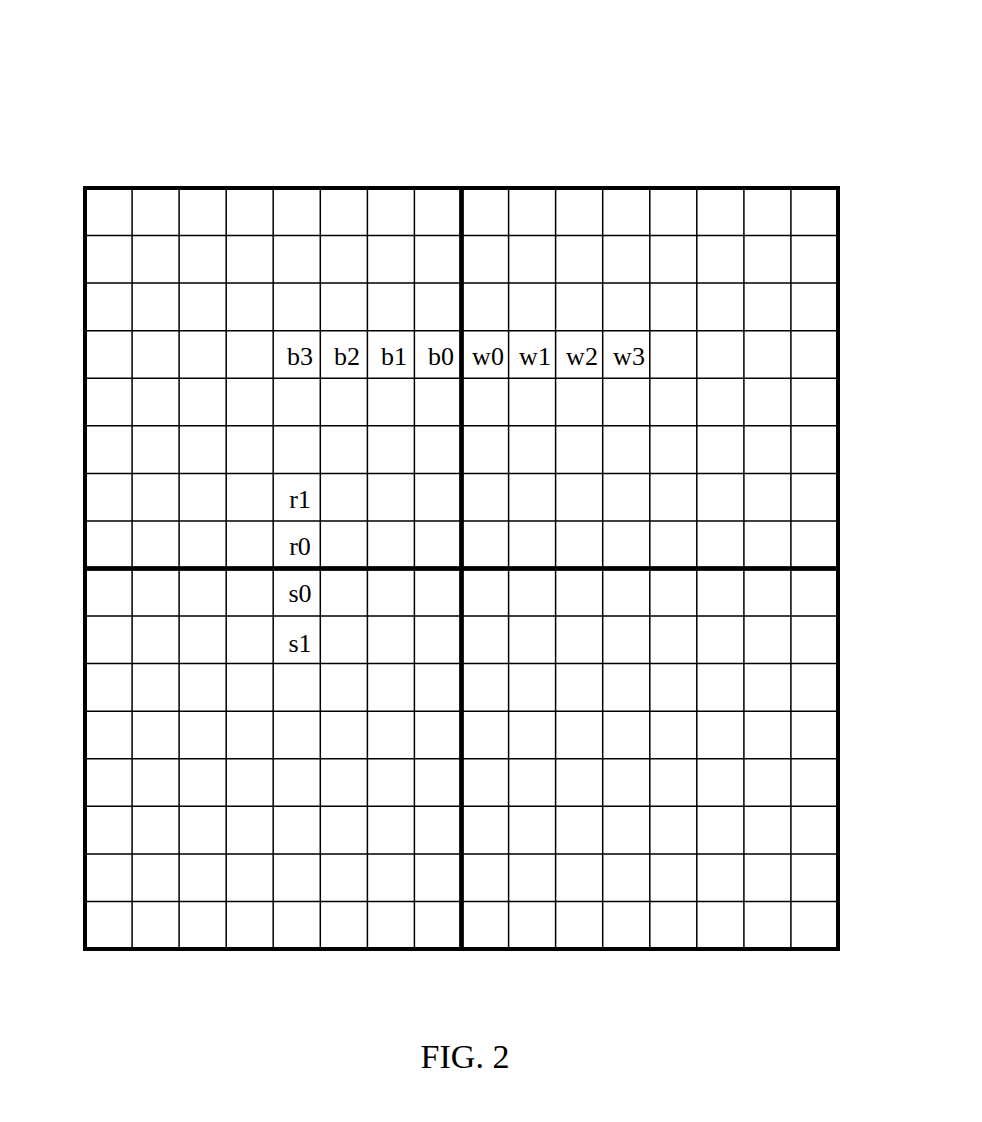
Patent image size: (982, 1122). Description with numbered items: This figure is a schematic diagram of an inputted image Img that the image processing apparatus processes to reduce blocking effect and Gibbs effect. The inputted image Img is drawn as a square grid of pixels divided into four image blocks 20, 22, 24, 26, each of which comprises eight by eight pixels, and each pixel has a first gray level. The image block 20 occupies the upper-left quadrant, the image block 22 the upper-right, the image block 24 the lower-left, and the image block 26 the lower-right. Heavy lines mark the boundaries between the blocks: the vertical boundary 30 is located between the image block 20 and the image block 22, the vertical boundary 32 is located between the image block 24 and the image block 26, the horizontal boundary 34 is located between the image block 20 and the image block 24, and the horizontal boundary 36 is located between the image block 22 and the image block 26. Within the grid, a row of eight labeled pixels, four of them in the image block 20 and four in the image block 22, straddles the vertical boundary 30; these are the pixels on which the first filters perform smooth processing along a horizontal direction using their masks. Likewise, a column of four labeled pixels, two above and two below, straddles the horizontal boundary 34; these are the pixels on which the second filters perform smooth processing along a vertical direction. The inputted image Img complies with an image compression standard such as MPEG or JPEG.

The image block 20 is at (200, 188).
The image block 22 is at (718, 187).
The image block 24 is at (207, 949).
The image block 26 is at (722, 949).
The vertical boundary 30 is at (461, 210).
The vertical boundary 32 is at (463, 925).
The horizontal boundary 34 is at (112, 571).
The horizontal boundary 36 is at (815, 568).
The inputted image Img is at (562, 62).